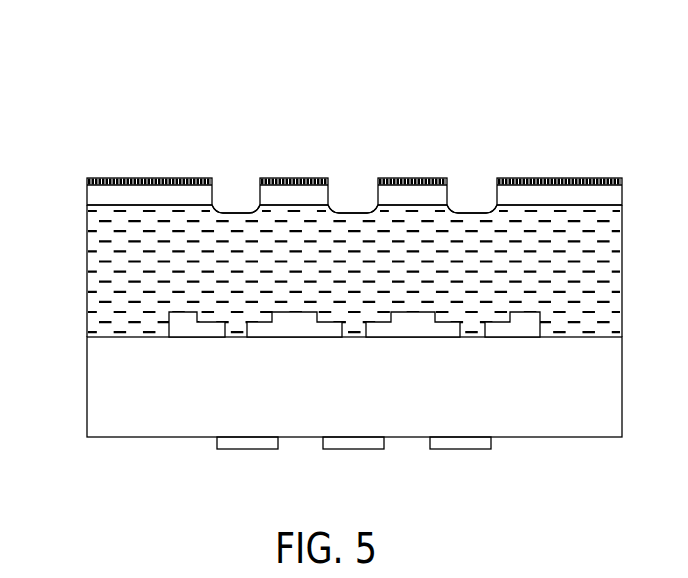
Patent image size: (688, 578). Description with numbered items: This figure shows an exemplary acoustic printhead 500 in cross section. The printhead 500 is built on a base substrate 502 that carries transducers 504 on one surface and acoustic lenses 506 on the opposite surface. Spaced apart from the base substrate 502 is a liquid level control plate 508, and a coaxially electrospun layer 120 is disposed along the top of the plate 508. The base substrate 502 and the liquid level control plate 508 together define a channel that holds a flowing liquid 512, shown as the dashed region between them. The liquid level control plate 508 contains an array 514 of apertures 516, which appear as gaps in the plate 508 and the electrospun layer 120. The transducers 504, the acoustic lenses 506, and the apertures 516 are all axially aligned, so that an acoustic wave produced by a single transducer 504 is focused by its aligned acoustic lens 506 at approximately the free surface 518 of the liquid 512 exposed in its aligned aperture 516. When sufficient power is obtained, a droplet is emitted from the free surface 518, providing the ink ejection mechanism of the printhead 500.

The printhead 500 is at (518, 93).
The base substrate 502 is at (97, 388).
The transducers 504 is at (249, 442).
The acoustic lenses 506 is at (415, 325).
The liquid level control plate 508 is at (97, 196).
The flowing liquid 512 is at (97, 265).
The array 514 is at (330, 117).
The apertures 516 is at (340, 188).
The free surface 518 is at (244, 205).
The coaxially electrospun layer 120 is at (148, 178).